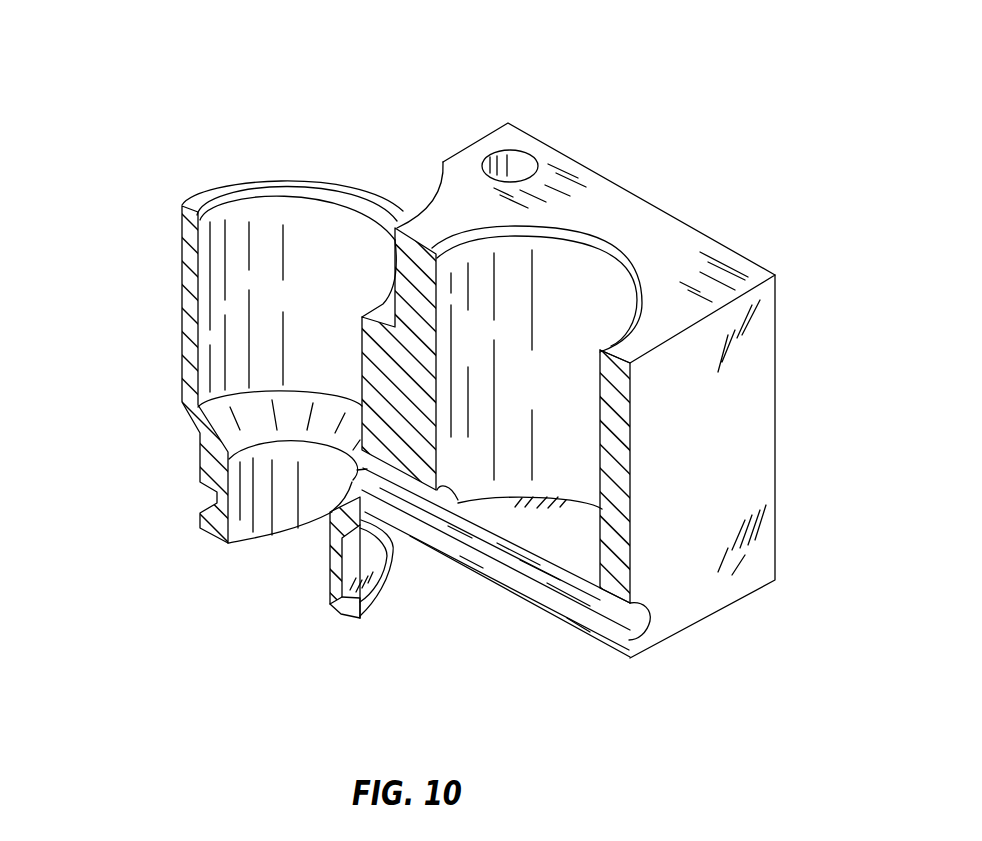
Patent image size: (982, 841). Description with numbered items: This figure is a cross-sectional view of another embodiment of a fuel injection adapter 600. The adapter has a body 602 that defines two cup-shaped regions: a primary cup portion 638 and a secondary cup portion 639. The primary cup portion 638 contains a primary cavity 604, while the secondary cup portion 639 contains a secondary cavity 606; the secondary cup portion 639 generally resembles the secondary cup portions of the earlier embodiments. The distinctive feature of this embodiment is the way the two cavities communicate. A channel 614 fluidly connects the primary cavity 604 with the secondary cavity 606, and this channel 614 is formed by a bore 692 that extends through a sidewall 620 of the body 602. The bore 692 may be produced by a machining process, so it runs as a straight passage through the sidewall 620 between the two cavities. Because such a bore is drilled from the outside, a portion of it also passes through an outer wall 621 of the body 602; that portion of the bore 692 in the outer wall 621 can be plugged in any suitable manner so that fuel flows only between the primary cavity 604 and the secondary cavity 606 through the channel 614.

The fuel injection adapter 600 is at (716, 80).
The body 602 is at (627, 217).
The primary cavity 604 is at (262, 224).
The secondary cavity 606 is at (560, 260).
The channel 614 is at (403, 508).
The sidewall 620 is at (598, 292).
The outer wall 621 is at (728, 475).
The primary cup portion 638 is at (158, 340).
The secondary cup portion 639 is at (808, 424).
The bore 692 is at (630, 624).